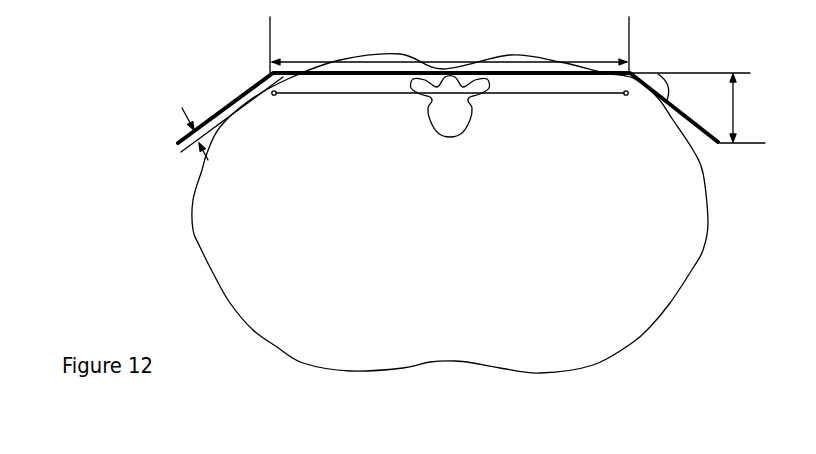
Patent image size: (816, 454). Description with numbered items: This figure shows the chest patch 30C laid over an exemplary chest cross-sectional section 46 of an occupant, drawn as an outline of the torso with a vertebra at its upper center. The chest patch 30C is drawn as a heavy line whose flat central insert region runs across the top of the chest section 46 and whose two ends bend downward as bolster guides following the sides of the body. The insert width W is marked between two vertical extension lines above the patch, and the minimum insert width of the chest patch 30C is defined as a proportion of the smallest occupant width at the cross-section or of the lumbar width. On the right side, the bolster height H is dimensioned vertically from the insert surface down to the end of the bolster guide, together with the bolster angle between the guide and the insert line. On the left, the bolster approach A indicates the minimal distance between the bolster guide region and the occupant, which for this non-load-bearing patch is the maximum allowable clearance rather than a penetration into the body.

The chest patch 30C is at (245, 92).
The torso cross-section of patient 46 is at (193, 230).
The width W is at (449, 56).
The wing/bolster height H is at (697, 108).
The bolster approach A is at (179, 134).